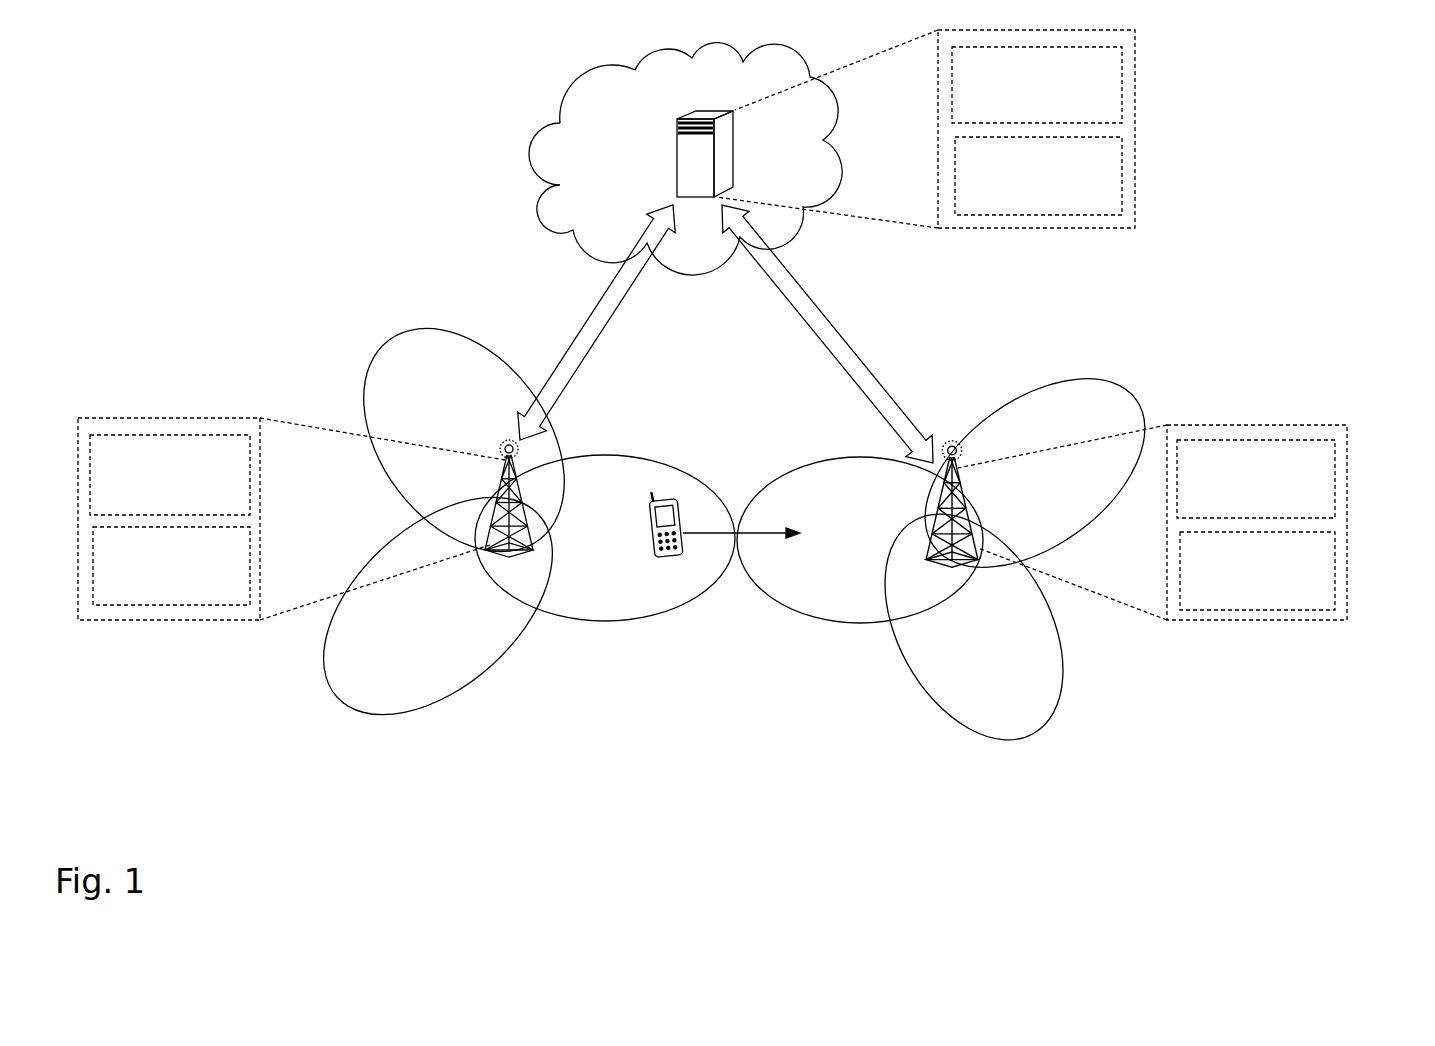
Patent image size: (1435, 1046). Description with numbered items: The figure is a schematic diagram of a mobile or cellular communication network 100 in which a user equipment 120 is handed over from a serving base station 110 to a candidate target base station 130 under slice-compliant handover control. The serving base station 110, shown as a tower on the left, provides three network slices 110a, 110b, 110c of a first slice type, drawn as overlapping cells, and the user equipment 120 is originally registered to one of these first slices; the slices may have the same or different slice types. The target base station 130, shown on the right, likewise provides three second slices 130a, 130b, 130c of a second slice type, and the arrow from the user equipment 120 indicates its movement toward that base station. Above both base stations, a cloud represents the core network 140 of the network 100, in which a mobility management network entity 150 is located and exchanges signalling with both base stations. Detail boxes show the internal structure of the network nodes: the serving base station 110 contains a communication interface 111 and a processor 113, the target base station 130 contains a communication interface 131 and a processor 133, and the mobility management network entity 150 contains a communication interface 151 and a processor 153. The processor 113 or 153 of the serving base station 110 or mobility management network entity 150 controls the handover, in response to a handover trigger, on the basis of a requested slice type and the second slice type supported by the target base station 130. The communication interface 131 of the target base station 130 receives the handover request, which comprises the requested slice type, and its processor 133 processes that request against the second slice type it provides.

The mobile communication network 100 is at (338, 163).
The serving base station 110 is at (517, 470).
The first slice 110a is at (622, 622).
The first slice 110b is at (397, 708).
The first slice 110c is at (460, 345).
The communication interface of first base station 111 is at (252, 477).
The processor 113 is at (252, 567).
The user equipment 120 is at (678, 511).
The target base station 130 is at (960, 466).
The second slice 130a is at (827, 622).
The second slice 130b is at (1128, 397).
The second slice 130c is at (1012, 742).
The communication interface 131 is at (1337, 478).
The processor 133 is at (1337, 572).
The core network 140 is at (567, 82).
The mobility management network entity 150 is at (677, 124).
The communication interface of server 151 is at (1122, 85).
The processor 153 is at (1122, 177).